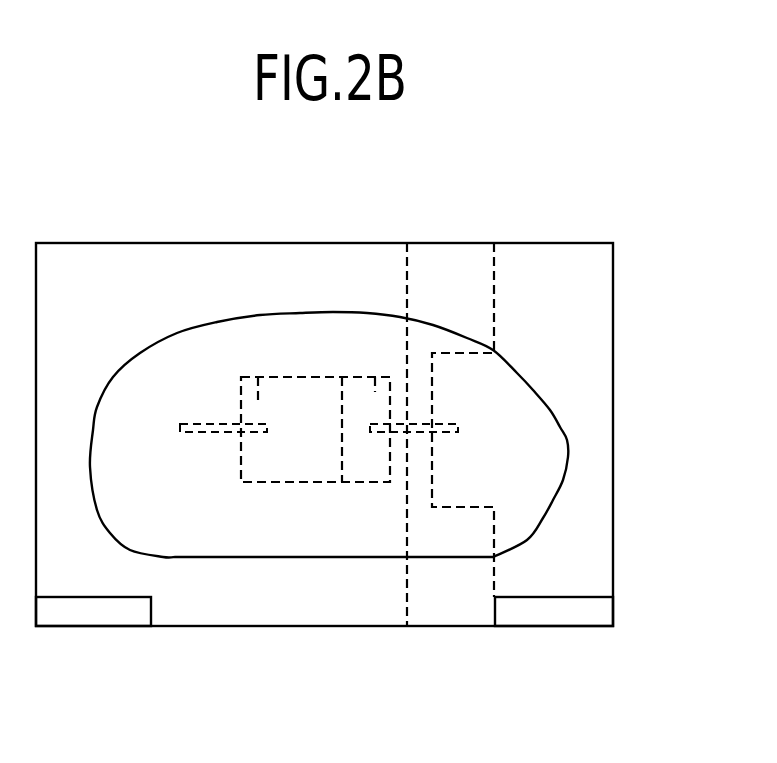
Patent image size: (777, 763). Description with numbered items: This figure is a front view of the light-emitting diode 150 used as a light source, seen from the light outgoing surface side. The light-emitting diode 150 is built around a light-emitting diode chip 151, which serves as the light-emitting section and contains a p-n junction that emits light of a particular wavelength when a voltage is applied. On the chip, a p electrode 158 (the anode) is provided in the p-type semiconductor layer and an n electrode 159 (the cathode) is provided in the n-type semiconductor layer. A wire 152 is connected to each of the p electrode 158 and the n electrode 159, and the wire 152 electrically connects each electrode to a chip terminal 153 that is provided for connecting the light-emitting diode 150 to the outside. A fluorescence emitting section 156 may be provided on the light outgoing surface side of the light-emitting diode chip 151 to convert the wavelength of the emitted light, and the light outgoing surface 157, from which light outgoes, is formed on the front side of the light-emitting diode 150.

The light-emitting diode 150 is at (325, 628).
The light-emitting diode chip 151 is at (313, 383).
The wire 152 is at (430, 427).
The chip terminal 153 is at (128, 610).
The fluorescence emitting section 156 is at (195, 353).
The light outgoing surface 157 is at (488, 455).
The p electrode 158 is at (375, 390).
The n electrode 159 is at (257, 400).